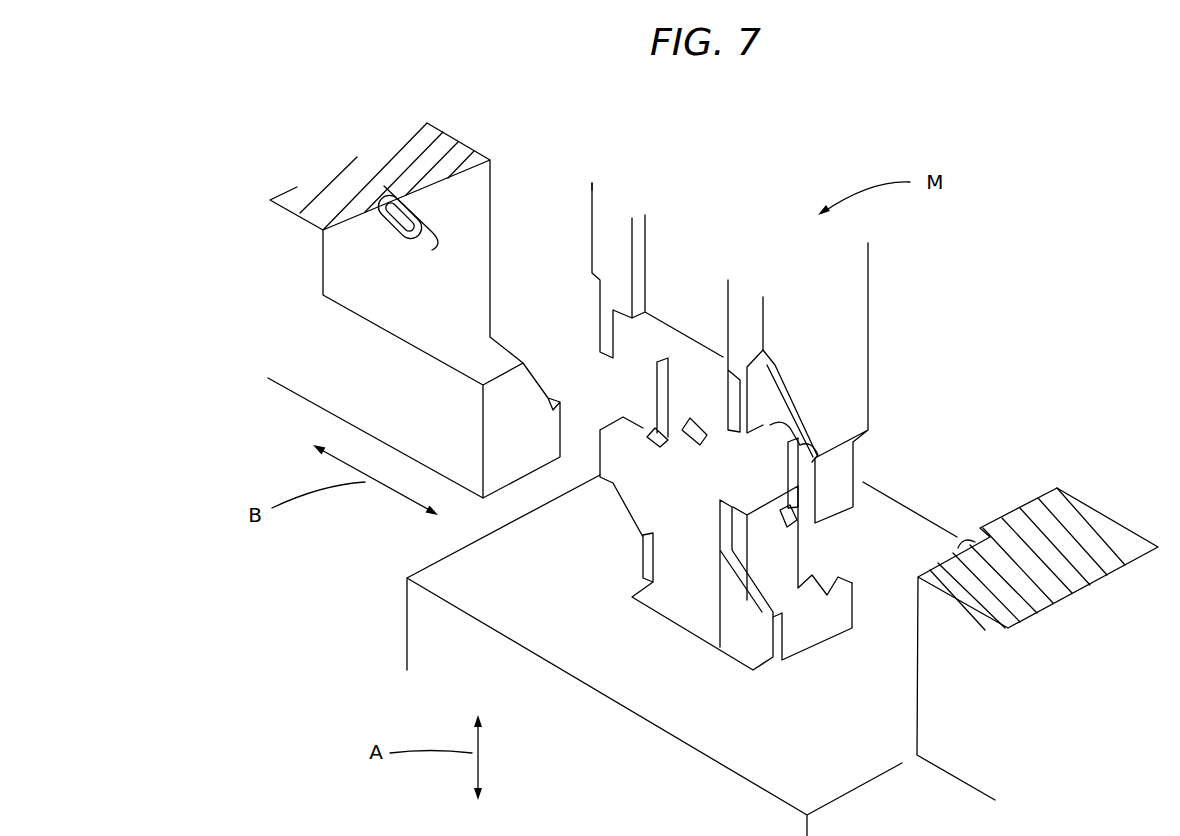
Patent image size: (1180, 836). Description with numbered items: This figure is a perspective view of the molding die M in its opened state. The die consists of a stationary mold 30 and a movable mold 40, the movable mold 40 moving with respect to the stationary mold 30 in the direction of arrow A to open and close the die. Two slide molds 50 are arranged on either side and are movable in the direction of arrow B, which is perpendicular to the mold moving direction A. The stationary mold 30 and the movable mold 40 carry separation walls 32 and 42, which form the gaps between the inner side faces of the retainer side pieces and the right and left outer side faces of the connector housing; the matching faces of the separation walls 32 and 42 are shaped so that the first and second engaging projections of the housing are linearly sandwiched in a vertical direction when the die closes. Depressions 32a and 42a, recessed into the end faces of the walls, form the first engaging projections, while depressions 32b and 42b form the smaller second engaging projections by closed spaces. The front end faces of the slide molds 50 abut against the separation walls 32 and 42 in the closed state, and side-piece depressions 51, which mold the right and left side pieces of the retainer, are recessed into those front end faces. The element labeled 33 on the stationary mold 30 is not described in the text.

The stationary mold 30 is at (802, 327).
The separation wall 32 is at (657, 392).
The depression 32a is at (787, 417).
The depression 32b is at (808, 520).
The holder 33 is at (667, 292).
The movable mold 40 is at (366, 583).
The separation wall 42 is at (726, 558).
The depression 42a is at (778, 505).
The depression 42b is at (803, 573).
The slide mold 50 is at (647, 461).
The side-piece depression 51 is at (367, 250).